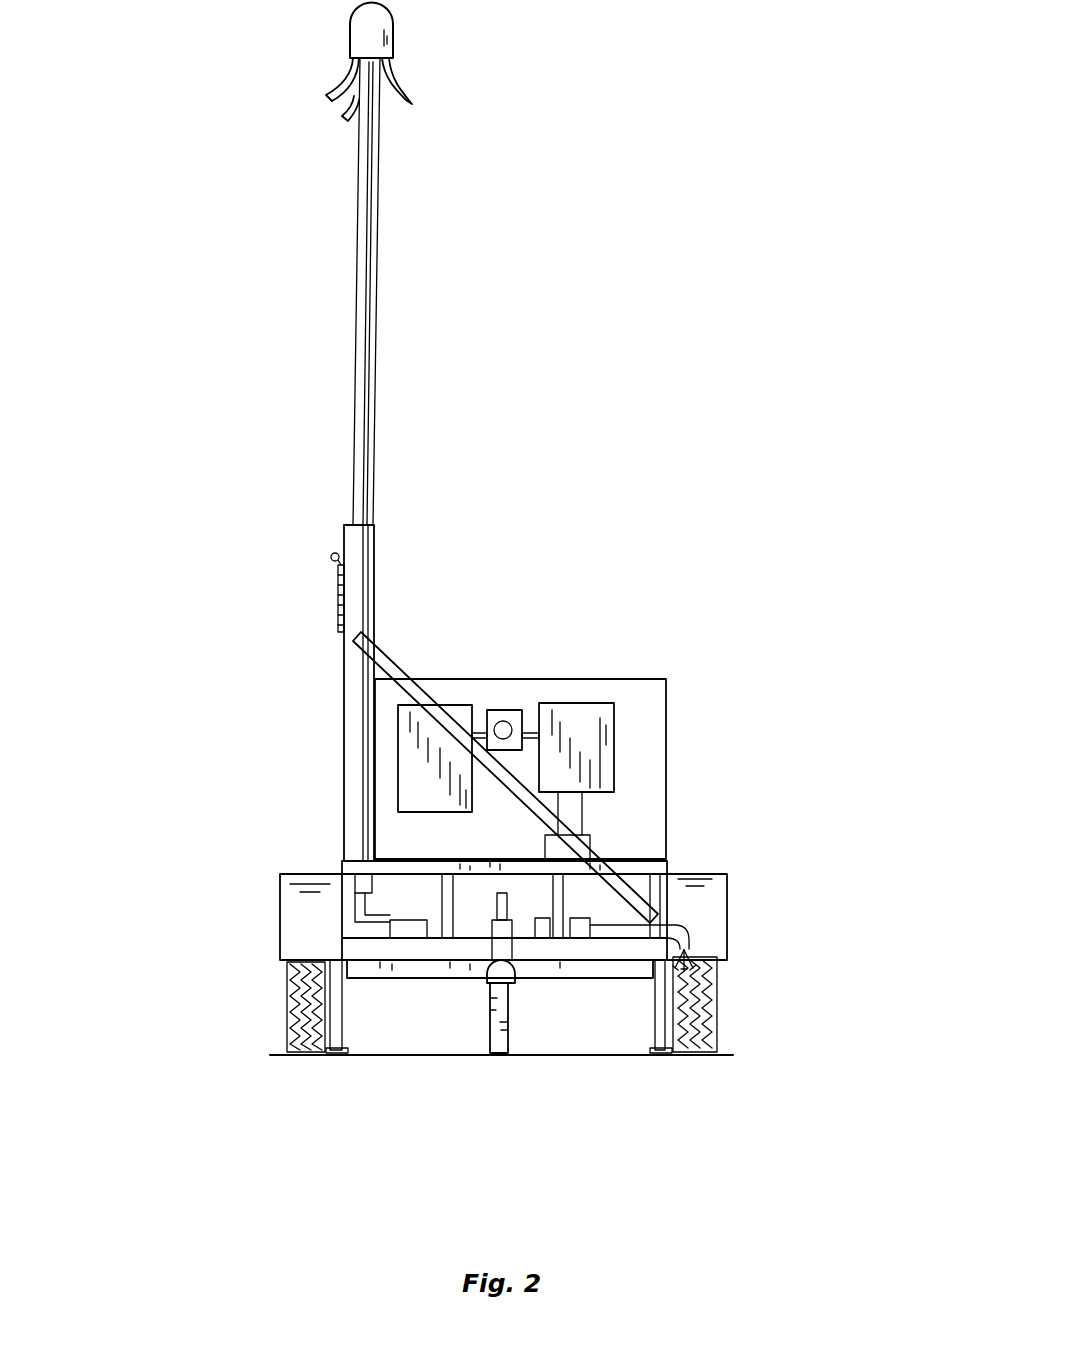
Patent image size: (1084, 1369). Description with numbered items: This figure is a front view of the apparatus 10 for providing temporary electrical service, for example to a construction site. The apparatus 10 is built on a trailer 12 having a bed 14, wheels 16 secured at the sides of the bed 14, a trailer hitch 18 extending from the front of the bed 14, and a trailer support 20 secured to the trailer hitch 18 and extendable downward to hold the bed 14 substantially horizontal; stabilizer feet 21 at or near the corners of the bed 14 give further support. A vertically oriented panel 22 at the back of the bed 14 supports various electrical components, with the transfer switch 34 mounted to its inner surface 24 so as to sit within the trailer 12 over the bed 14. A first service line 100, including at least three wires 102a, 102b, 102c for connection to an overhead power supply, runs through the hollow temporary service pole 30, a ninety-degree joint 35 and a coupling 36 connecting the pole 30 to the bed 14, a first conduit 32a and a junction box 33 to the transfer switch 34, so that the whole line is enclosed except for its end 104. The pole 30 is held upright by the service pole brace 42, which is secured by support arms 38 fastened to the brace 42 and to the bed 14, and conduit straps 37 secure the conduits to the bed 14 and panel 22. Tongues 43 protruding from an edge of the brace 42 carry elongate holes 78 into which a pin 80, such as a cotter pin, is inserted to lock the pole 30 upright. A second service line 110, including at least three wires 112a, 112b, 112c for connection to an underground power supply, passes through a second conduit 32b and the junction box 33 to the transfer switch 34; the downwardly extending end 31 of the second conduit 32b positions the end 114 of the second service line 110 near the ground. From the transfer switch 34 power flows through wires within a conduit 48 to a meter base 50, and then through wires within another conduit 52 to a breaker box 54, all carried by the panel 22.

The apparatus 10 is at (564, 336).
The trailer 12 is at (220, 665).
The bed 14 is at (320, 915).
The wheels 16 is at (290, 1013).
The trailer hitch 18 is at (506, 986).
The trailer support 20 is at (470, 945).
The stabilizer feet 21 is at (333, 1052).
The panel 22 is at (688, 696).
The inner surface 24 is at (656, 786).
The temporary service pole 30 is at (363, 298).
The downwardly extending end 31 is at (703, 940).
The first conduit 32a is at (460, 936).
The second conduit 32b is at (640, 930).
The junction box 33 is at (577, 936).
The transfer switch 34 is at (598, 717).
The 90° joint 35 is at (360, 932).
The coupling 36 is at (398, 933).
The conduit straps 37 is at (543, 842).
The support arms 38 is at (400, 675).
The service pole brace 42 is at (352, 538).
The tongues 43 is at (350, 607).
The conduit 48 is at (529, 731).
The meter base 50 is at (503, 721).
The conduit 52 is at (477, 745).
The breaker box 54 is at (410, 763).
The elongate hole 78 is at (339, 628).
The pin 80 is at (332, 556).
The first service line 100 is at (190, 33).
The wire 102a is at (403, 100).
The wire 102b is at (346, 117).
The wire 102c is at (333, 97).
The end 104 is at (448, 108).
The second service line 110 is at (850, 925).
The wire 112a is at (718, 967).
The wire 112b is at (716, 983).
The wire 112c is at (714, 1003).
The end 114 is at (659, 988).